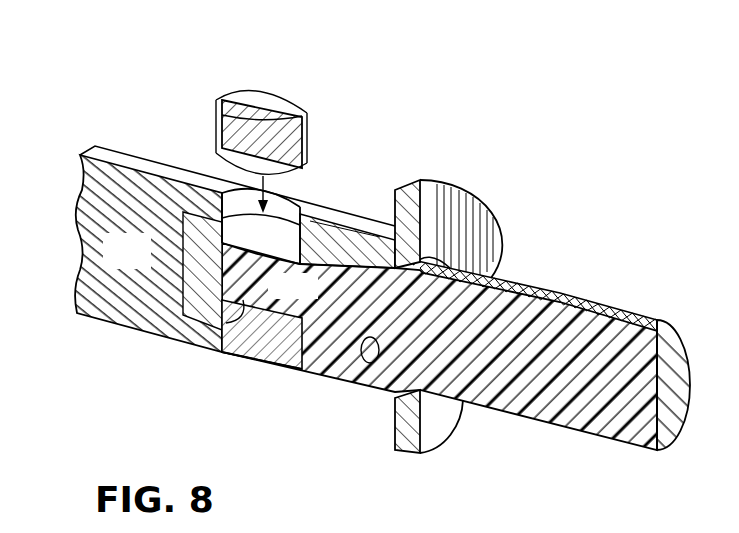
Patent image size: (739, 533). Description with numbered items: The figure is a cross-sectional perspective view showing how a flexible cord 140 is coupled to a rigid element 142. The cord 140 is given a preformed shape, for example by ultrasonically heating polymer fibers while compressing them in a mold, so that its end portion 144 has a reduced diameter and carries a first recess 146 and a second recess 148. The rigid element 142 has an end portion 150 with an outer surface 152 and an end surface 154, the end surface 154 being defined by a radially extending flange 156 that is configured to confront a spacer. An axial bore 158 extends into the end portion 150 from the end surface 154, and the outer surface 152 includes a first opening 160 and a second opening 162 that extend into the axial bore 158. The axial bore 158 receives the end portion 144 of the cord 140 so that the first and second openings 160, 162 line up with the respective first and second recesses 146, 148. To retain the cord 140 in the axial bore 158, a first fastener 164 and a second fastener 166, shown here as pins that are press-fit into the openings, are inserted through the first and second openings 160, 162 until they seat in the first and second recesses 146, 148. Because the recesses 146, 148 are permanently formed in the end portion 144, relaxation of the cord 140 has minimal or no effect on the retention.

The cord 140 is at (633, 308).
The rigid element 142 is at (91, 150).
The end portion 144 is at (310, 301).
The first recess 146 is at (275, 255).
The second recess 148 is at (214, 348).
The end portion 150 is at (145, 262).
The outer surface 152 is at (122, 160).
The end surface 154 is at (476, 242).
The radially extending flange 156 is at (430, 180).
The axial bore 158 is at (363, 363).
The first opening 160 is at (242, 208).
The second opening 162 is at (278, 362).
The first fastener 164 is at (252, 92).
The second fastener 166 is at (256, 366).